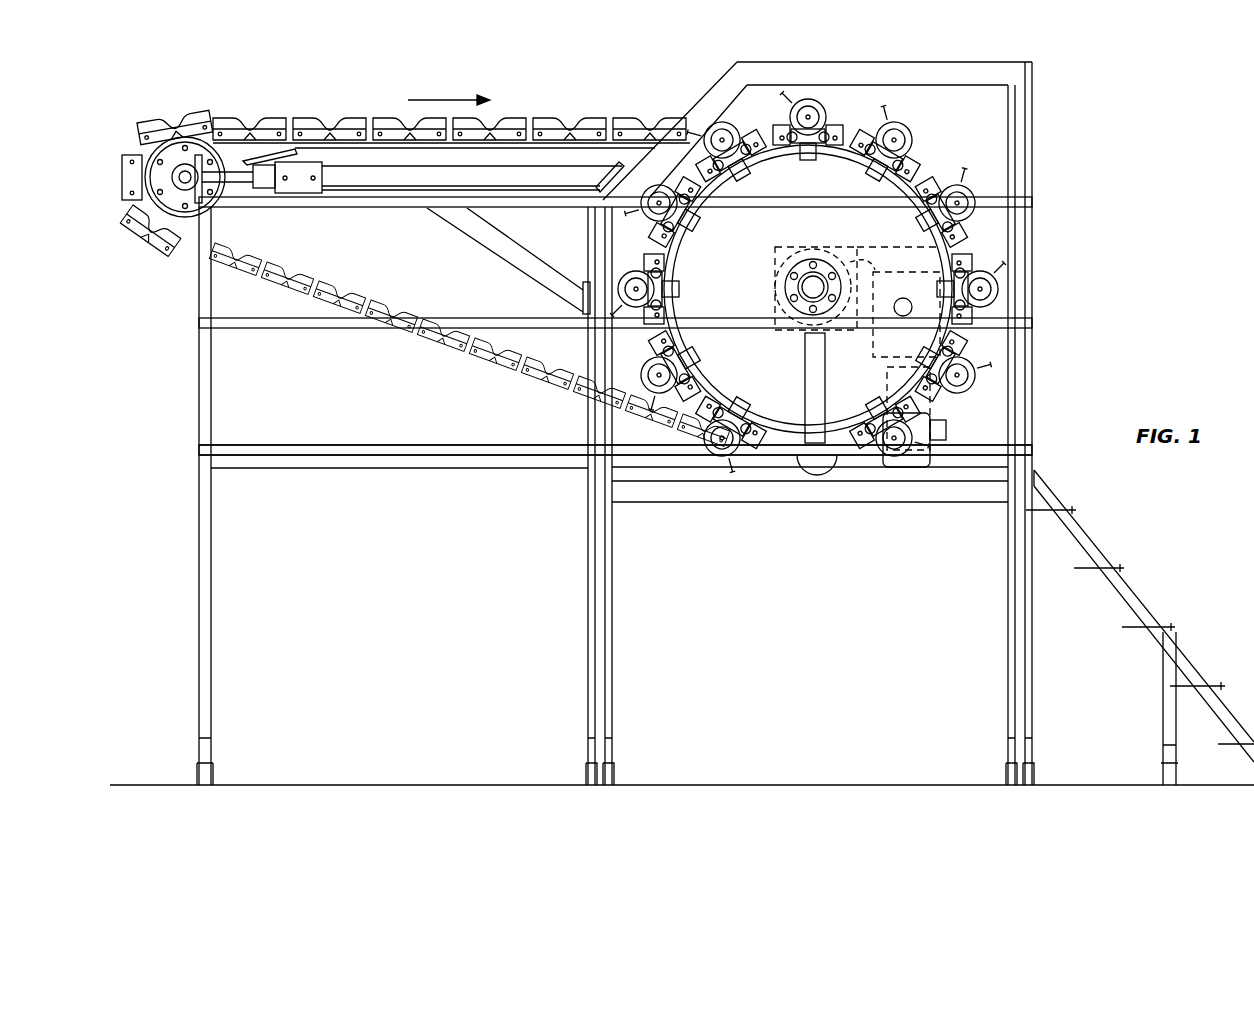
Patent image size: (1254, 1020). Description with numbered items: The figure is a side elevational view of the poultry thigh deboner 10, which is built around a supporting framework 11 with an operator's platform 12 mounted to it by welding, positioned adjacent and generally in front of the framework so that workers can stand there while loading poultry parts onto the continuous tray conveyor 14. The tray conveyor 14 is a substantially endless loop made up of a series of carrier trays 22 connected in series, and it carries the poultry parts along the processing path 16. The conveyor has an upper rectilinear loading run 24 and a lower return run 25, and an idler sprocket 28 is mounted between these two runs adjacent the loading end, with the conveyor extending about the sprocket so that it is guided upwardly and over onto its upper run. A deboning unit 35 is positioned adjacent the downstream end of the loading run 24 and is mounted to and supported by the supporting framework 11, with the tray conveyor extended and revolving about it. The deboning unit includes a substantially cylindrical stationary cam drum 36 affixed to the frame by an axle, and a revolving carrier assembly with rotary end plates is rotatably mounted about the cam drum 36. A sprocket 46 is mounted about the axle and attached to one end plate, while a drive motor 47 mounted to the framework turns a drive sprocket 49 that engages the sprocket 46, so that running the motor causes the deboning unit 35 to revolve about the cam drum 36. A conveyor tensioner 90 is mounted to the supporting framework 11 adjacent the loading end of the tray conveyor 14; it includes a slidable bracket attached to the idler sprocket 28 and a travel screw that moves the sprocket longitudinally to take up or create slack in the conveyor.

The poultry thigh deboner 10 is at (1105, 123).
The supporting framework 11 is at (1020, 177).
The operator's platform 12 is at (276, 445).
The tray conveyor 14 is at (405, 160).
The processing path 16 is at (446, 100).
The carrier trays 22 is at (469, 344).
The upper rectilinear loading run 24 is at (592, 108).
The lower return run 25 is at (521, 378).
The idler sprocket 28 is at (160, 230).
The deboning unit 35 is at (808, 258).
The stationary cam drum 36 is at (782, 410).
The sprocket 46 is at (792, 242).
The drive motor 47 is at (945, 424).
The drive sprocket 49 is at (910, 250).
The conveyor tensioner 90 is at (300, 190).